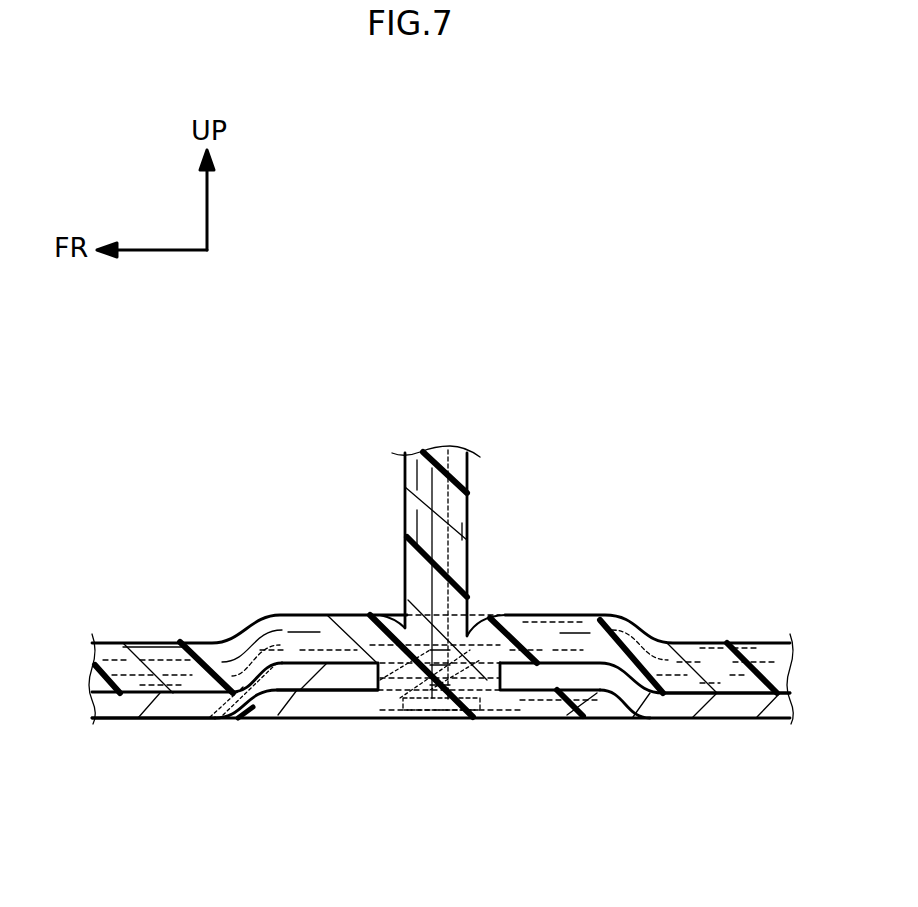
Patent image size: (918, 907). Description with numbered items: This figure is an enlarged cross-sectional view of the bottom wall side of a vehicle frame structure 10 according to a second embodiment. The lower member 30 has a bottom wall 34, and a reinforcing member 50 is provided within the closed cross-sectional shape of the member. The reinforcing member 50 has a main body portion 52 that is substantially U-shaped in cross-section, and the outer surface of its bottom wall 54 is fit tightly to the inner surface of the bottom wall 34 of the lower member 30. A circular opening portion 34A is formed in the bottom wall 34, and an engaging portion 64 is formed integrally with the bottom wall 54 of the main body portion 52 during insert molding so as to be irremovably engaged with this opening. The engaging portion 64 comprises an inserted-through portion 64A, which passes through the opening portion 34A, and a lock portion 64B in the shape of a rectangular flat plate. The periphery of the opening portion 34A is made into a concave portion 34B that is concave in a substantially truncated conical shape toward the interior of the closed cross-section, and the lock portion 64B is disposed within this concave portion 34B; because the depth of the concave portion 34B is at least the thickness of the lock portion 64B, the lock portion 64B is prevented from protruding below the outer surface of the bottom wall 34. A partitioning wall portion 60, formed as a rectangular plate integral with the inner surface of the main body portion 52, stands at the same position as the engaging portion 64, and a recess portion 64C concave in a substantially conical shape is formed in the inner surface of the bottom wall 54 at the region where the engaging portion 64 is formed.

The vehicle body structure 10 is at (252, 503).
The lower member 30 is at (131, 719).
The bottom wall 34 is at (752, 705).
The opening portion 34A is at (382, 695).
The concave portion 34B is at (537, 691).
The reinforcing member 50 is at (137, 640).
The main body portion 52 is at (525, 619).
The bottom wall 54 is at (702, 637).
The partitioning wall portion 60 is at (469, 538).
The engaging portion 64 is at (450, 718).
The inserted-through portion 64A is at (500, 663).
The lock portion 64B is at (322, 720).
The recess portion 64C is at (473, 620).